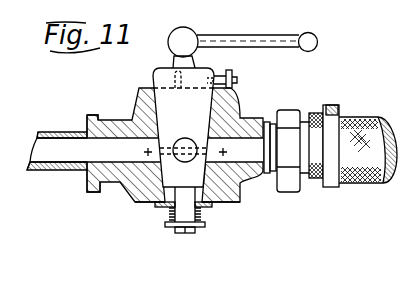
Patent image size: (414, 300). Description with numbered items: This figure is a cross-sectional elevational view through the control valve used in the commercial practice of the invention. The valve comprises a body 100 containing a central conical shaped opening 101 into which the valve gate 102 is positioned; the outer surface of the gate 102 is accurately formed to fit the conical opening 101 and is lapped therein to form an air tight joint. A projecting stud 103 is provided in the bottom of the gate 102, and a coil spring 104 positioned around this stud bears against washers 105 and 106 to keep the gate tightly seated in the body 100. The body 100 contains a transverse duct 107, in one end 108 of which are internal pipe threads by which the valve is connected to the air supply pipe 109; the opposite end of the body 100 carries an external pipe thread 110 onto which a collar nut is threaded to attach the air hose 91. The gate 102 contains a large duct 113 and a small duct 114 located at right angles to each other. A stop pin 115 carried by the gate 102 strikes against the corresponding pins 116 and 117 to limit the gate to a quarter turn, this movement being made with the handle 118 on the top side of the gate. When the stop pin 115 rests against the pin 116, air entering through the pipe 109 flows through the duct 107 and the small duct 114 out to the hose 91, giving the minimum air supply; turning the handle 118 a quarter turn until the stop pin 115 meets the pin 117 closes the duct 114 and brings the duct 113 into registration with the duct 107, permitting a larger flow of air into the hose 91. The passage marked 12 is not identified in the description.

The air hose 91 is at (358, 118).
The body 100 is at (241, 114).
The central conical shaped opening 101 is at (162, 207).
The valve gate 102 is at (175, 79).
The projecting stud 103 is at (196, 213).
The coil spring 104 is at (169, 214).
The washer 105 is at (214, 205).
The washer 106 is at (197, 226).
The transverse duct 107 is at (119, 183).
The end of the valve body 108 is at (86, 180).
The air supply pipe 109 is at (52, 131).
The external pipe thread 110 is at (273, 120).
The large duct 113 is at (184, 138).
The small duct 114 is at (184, 160).
The stop pin 115 is at (238, 80).
The stop pin 116 is at (236, 68).
The stop pin 117 is at (162, 84).
The handle 118 is at (277, 35).
The flow passage 12 is at (146, 150).